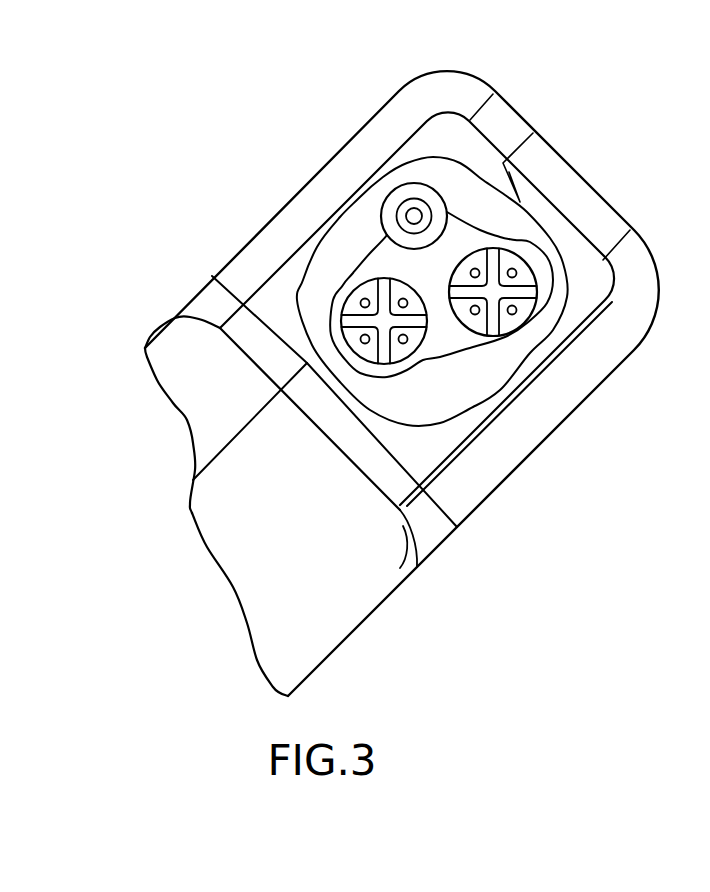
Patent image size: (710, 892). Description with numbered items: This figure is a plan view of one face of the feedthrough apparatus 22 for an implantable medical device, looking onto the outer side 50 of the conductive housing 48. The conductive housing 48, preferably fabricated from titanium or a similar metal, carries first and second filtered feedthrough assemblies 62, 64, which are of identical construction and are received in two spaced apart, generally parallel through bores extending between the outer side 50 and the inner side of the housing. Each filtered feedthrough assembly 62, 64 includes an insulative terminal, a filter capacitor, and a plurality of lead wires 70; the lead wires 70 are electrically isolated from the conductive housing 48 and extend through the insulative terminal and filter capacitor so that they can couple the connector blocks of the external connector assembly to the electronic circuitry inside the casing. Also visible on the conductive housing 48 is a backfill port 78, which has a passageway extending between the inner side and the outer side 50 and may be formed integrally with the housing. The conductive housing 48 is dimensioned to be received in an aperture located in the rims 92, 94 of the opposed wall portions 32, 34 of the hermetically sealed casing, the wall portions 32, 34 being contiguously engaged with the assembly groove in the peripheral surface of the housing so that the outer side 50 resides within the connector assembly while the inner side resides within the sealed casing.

The feedthrough apparatus 22 is at (482, 375).
The first wall portion 32 is at (193, 390).
The second wall portion 34 is at (272, 613).
The conductive housing 48 is at (312, 239).
The outer side 50 is at (458, 180).
The first filtered feedthrough assembly 62 is at (432, 347).
The second filtered feedthrough assembly 64 is at (561, 247).
The lead wires 70 is at (515, 313).
The backfill port 78 is at (402, 196).
The rim 92 is at (230, 450).
The rim 94 is at (237, 437).